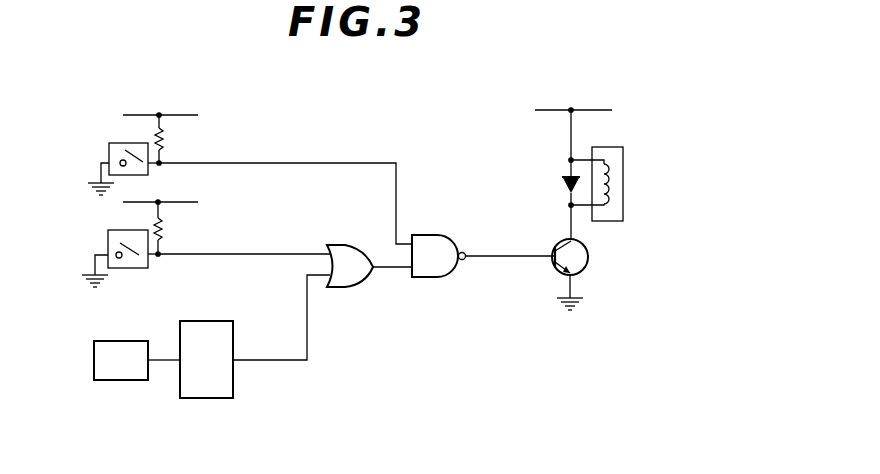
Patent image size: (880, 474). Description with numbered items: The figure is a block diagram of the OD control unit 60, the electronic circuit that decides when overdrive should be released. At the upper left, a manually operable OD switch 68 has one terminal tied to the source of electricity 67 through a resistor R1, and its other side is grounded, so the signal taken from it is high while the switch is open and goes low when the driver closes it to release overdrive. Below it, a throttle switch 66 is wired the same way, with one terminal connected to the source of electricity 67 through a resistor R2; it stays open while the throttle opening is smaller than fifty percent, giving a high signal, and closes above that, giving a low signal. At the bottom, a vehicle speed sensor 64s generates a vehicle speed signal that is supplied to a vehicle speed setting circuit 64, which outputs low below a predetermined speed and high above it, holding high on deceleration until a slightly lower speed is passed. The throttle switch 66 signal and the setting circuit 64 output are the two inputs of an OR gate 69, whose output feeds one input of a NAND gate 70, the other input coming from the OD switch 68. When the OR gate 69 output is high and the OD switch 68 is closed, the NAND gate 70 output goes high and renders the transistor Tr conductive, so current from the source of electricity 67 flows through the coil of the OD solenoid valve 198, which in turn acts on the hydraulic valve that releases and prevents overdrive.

The OD control unit 60 is at (464, 148).
The source of electricity 67 is at (184, 115).
The OD switch 68 is at (103, 146).
The throttle switch 66 is at (100, 231).
The resistor R1 is at (168, 143).
The resistor R2 is at (167, 233).
The OR gate 69 is at (360, 288).
The NAND gate 70 is at (445, 278).
The transistor Tr is at (552, 268).
The OD solenoid valve 198 is at (623, 162).
The vehicle speed setting circuit 64 is at (220, 400).
The vehicle speed sensor 64s is at (124, 382).